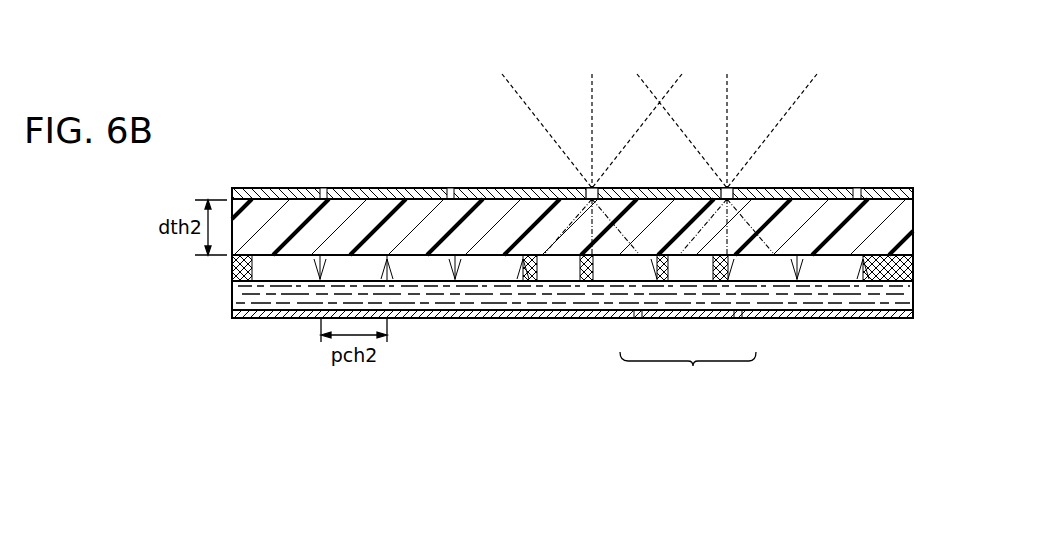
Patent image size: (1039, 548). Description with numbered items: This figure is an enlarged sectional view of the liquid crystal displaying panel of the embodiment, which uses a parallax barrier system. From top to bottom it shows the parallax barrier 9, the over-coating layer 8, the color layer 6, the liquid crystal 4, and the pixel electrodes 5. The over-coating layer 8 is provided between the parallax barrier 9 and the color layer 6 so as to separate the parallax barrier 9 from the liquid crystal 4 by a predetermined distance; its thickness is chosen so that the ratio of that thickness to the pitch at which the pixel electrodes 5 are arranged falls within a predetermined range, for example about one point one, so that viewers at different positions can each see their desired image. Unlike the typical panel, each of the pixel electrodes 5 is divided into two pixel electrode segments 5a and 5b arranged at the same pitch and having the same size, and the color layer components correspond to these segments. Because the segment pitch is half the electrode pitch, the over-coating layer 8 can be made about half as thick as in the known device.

The parallax barrier 9 is at (913, 197).
The over-coating layer 8 is at (913, 223).
The color layer 6 is at (913, 270).
The liquid crystal 4 is at (913, 298).
The pixel electrodes 5 is at (688, 373).
The pixel electrode segment 5a is at (739, 318).
The pixel electrode segment 5b is at (639, 318).